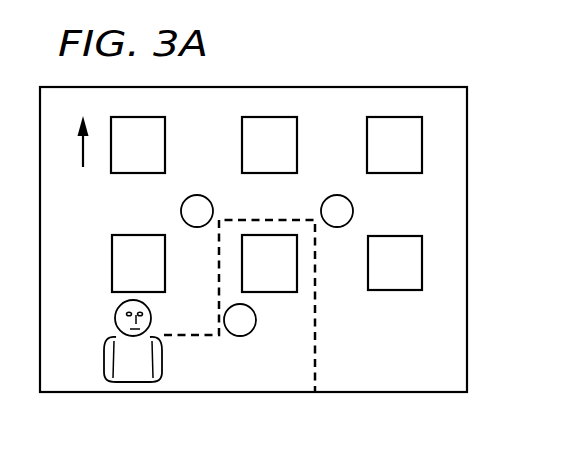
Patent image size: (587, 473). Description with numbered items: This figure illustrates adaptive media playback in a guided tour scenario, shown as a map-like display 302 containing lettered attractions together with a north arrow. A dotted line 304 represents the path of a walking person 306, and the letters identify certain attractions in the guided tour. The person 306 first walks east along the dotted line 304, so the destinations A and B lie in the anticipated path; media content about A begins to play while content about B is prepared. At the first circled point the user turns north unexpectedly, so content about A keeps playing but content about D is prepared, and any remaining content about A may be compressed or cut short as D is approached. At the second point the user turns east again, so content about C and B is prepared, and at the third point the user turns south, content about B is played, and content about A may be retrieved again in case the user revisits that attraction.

The map display area 302 is at (468, 181).
The dotted line 304 is at (201, 336).
The walking person 306 is at (122, 380).